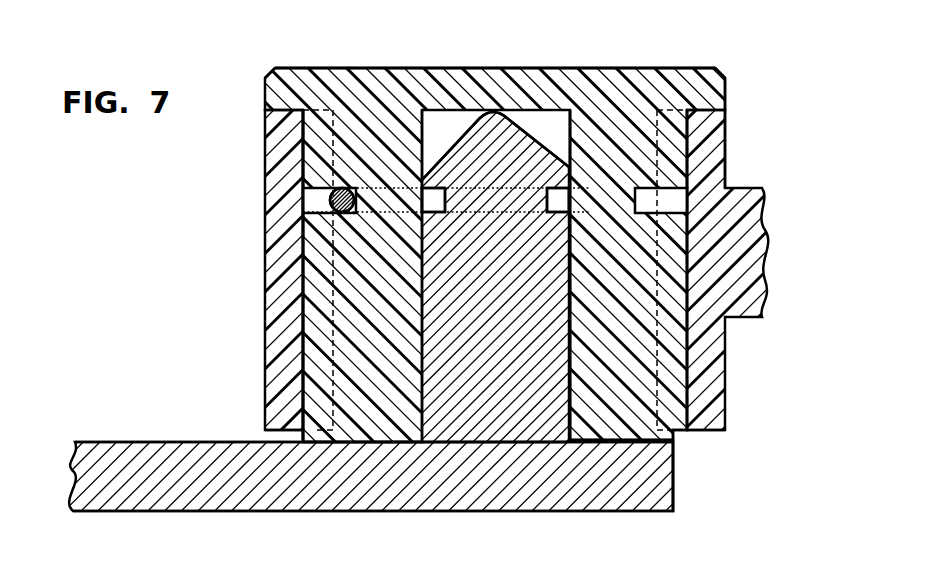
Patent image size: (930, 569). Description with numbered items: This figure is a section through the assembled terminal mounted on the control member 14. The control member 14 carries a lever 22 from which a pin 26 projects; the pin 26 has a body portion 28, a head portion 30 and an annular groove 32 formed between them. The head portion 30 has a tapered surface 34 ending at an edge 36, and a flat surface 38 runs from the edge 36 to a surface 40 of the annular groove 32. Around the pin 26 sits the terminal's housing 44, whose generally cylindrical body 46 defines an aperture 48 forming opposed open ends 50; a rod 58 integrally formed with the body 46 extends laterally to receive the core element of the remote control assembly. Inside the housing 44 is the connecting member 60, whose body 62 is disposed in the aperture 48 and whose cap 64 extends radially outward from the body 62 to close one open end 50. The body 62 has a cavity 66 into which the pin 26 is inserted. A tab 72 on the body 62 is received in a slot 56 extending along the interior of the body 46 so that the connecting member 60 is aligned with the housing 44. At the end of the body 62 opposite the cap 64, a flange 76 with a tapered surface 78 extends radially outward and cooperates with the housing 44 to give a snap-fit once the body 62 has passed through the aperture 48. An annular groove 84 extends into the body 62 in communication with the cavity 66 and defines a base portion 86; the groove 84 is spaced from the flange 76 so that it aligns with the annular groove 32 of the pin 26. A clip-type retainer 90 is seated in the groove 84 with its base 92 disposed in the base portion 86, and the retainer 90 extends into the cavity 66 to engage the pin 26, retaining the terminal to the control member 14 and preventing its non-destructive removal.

The control member 14 is at (98, 443).
The lever 22 is at (180, 490).
The pin 26 is at (571, 348).
The body portion 28 is at (540, 400).
The head portion 30 is at (493, 130).
The annular groove 32 is at (577, 183).
The tapered surface 34 is at (457, 137).
The edge 36 is at (421, 186).
The flat surface 38 is at (420, 184).
The surface of the annular groove 40 is at (560, 198).
The housing 44 is at (726, 117).
The cylindrical body 46 is at (270, 132).
The aperture 48 is at (308, 312).
The open end 50 is at (275, 68).
The slot 56 is at (333, 360).
The rod 58 is at (677, 198).
The connecting member 60 is at (264, 89).
The body 62 is at (420, 390).
The cap 64 is at (475, 75).
The cavity 66 is at (567, 128).
The tab 72 is at (317, 394).
The flange 76 is at (332, 442).
The tapered surface 78 is at (673, 442).
The groove 84 is at (745, 225).
The base portion 86 is at (322, 212).
The retainer 90 is at (330, 193).
The base 92 is at (331, 203).